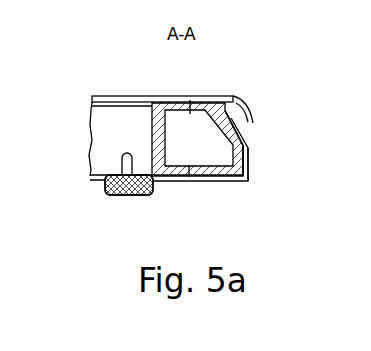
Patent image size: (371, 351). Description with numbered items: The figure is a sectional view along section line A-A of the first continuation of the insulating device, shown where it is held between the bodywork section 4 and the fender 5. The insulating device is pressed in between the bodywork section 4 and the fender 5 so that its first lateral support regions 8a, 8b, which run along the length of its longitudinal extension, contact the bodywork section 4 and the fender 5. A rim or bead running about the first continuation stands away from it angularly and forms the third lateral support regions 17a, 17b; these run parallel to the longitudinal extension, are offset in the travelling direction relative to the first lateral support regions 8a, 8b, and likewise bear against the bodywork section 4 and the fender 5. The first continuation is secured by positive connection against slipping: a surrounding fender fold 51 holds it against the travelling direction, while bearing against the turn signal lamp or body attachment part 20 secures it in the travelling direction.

The bodywork section 4 is at (165, 97).
The fender 5 is at (190, 182).
The third lateral support region 17a is at (173, 97).
The third lateral support region 17b is at (163, 178).
The first lateral support region 8a is at (218, 98).
The first lateral support region 8b is at (228, 182).
The fender fold 51 is at (246, 153).
The turn signal lamp or body attachment part 20 is at (120, 196).